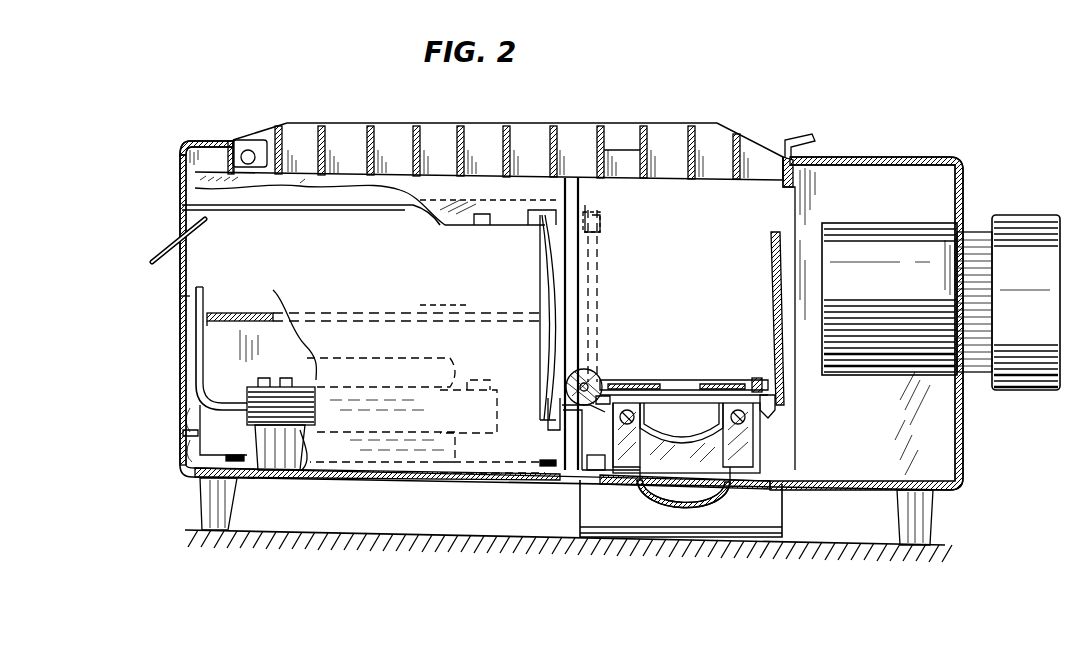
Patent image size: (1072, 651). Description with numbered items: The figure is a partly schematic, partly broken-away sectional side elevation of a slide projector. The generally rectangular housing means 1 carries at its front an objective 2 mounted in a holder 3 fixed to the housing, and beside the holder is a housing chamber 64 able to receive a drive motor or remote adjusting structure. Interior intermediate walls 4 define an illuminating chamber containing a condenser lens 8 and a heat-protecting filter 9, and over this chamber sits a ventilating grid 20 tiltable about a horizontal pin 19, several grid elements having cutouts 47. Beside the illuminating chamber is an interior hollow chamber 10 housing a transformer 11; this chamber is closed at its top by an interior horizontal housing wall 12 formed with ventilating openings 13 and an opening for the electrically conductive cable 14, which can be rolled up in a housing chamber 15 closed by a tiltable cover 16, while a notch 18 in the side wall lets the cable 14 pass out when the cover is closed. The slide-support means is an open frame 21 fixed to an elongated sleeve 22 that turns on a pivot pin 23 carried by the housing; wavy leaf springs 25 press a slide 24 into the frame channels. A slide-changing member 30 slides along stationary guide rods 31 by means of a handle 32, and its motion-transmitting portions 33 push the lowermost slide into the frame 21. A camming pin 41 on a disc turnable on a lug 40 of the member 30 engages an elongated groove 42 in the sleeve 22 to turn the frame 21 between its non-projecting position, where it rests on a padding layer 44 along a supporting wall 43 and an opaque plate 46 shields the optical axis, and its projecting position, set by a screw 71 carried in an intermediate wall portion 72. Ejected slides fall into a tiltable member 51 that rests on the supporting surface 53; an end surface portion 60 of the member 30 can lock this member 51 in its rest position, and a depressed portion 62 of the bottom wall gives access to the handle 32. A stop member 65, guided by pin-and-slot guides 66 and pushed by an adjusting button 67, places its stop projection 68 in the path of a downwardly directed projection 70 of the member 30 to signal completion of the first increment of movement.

The housing means 1 is at (866, 157).
The objective 2 is at (1012, 218).
The holder 3 is at (895, 235).
The interior intermediate walls 4 is at (430, 188).
The condenser lens 8 is at (540, 235).
The filter 9 is at (482, 225).
The interior hollow chamber 10 is at (212, 377).
The transformer 11 is at (255, 392).
The interior horizontal housing wall 12 is at (232, 312).
The ventilating openings 13 is at (268, 313).
The electrically conductive cable 14 is at (182, 296).
The housing chamber 15 is at (218, 322).
The tiltable cover 16 is at (192, 195).
The notch 18 is at (210, 222).
The horizontal pin 19 is at (250, 150).
The ventilating grid 20 is at (352, 133).
The open frame 21 is at (603, 217).
The elongated sleeve 22 is at (600, 378).
The pivot pin 23 is at (590, 383).
The slide 24 is at (603, 248).
The wavy leaf springs 25 is at (625, 385).
The slide-changing member 30 is at (757, 440).
The stationary guide rods 31 is at (681, 424).
The handle 32 is at (672, 448).
The motion-transmitting portions 33 is at (672, 382).
The lug 40 is at (572, 418).
The camming pin 41 is at (574, 397).
The elongated groove 42 is at (556, 392).
The supporting wall 43 is at (762, 432).
The padding layer 44 is at (773, 422).
The opaque plate 46 is at (515, 197).
The cutouts 47 is at (647, 153).
The tiltable member 51 is at (783, 497).
The surface 53 is at (345, 532).
The end surface portion 60 is at (755, 455).
The depressed portion 62 is at (722, 500).
The housing chamber 64 is at (943, 440).
The stop member 65 is at (204, 488).
The pin-and-slot guides 66 is at (234, 455).
The adjusting button 67 is at (178, 420).
The stop projection 68 is at (597, 468).
The downwardly directed projection 70 is at (627, 452).
The screw 71 is at (598, 213).
The intermediate wall portion 72 is at (572, 178).